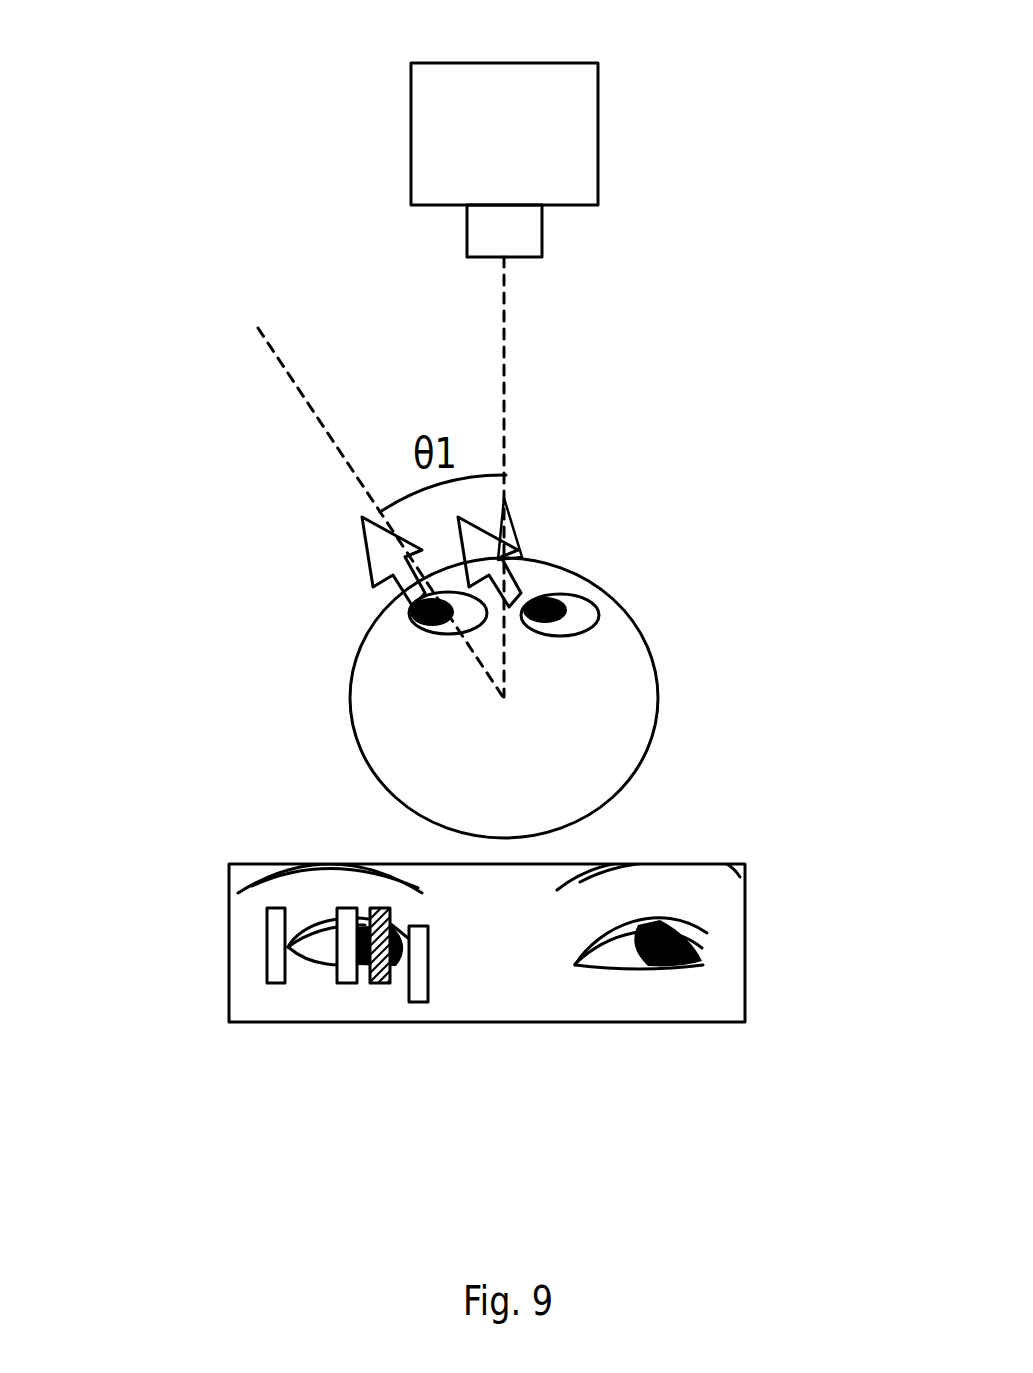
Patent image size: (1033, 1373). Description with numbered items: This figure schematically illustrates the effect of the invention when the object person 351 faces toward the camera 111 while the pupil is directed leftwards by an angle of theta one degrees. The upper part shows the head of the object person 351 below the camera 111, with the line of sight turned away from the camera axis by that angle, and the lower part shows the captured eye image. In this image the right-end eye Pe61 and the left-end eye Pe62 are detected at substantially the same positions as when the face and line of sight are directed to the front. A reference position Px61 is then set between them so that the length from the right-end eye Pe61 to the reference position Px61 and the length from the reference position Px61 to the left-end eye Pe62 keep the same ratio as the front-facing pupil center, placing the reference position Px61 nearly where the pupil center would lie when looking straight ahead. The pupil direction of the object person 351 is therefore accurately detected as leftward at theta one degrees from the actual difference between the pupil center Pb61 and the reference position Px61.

The camera 111 is at (505, 63).
The object person 351 is at (657, 690).
The left-end eye Pe62 is at (257, 951).
The reference position Px61 is at (334, 948).
The pupil center Pb61 is at (377, 984).
The right-end eye Pe61 is at (418, 1002).